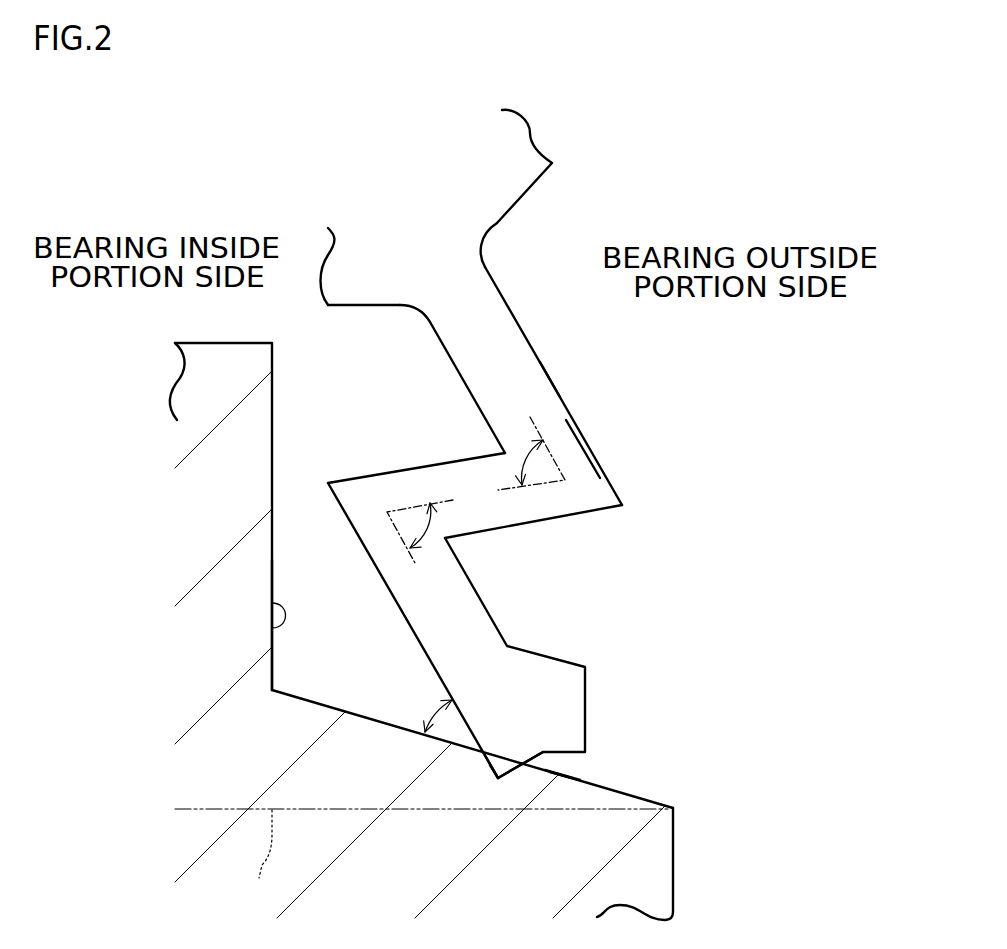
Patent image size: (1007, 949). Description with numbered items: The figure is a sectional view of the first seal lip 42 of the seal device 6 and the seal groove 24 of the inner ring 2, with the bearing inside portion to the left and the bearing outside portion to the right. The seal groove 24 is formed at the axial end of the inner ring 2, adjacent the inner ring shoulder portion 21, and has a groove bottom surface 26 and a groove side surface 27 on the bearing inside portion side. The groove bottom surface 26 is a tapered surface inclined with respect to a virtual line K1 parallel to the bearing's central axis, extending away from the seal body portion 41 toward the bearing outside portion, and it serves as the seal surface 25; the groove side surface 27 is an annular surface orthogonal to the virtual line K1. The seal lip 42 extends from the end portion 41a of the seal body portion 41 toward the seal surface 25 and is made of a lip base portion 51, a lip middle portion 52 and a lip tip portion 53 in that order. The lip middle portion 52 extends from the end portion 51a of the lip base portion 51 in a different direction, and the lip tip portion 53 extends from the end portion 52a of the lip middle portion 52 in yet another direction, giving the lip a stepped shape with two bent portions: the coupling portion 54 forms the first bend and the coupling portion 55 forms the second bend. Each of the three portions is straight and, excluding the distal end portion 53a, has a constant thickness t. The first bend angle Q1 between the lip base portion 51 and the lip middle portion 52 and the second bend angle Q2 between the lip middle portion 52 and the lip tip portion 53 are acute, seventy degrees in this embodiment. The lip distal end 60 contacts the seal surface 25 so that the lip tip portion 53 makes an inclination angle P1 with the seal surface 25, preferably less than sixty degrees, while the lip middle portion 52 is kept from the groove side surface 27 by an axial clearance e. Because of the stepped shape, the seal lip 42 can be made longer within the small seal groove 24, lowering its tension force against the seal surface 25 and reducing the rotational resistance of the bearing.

The inner ring 2 is at (682, 859).
The seal device 6 is at (352, 307).
The inner ring shoulder portion 21 is at (207, 372).
The seal groove 24 is at (598, 768).
The seal surface 25 is at (560, 764).
The groove bottom surface 26 is at (561, 775).
The groove side surface 27 is at (272, 627).
The seal body portion 41 is at (528, 202).
The end portion of the seal body portion 41a is at (423, 257).
The first seal lip 42 is at (555, 380).
The lip base portion 51 is at (548, 364).
The end portion of the lip base portion 51a is at (585, 430).
The lip middle portion 52 is at (475, 502).
The end portion of the lip middle portion 52a is at (334, 480).
The lip tip portion 53 is at (443, 630).
The distal end portion of the lip tip portion 53a is at (498, 766).
The coupling portion 54 is at (575, 465).
The coupling portion 55 is at (375, 520).
The lip distal end 60 is at (500, 780).
The virtual line K1 is at (422, 858).
The clearance e is at (302, 490).
The thickness t is at (537, 358).
The inclination angle P1 is at (429, 711).
The first bend angle Q1 is at (523, 462).
The second bend angle Q2 is at (450, 537).